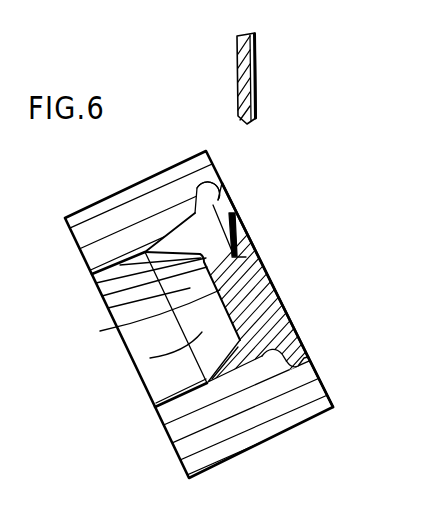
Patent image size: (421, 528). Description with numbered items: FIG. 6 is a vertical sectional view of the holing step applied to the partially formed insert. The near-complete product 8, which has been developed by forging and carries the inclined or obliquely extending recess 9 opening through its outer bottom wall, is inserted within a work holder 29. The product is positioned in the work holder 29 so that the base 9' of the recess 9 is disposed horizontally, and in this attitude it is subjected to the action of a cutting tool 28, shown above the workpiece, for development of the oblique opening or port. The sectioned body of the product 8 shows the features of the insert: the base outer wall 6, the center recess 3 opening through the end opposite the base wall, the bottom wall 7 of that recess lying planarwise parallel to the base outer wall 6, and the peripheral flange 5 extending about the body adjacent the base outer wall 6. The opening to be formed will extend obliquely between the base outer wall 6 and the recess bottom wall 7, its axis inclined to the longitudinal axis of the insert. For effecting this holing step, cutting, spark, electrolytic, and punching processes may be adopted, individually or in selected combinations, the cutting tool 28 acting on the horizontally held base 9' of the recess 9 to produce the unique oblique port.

The center recess 3 is at (150, 358).
The peripheral flange 5 is at (293, 358).
The base outer wall 6 is at (265, 270).
The bottom wall 7 is at (100, 331).
The near-complete product 8 is at (265, 298).
The inclined recess 9 is at (231, 202).
The base of recess 9' is at (261, 223).
The cutting tool 28 is at (256, 92).
The work holder 29 is at (307, 380).